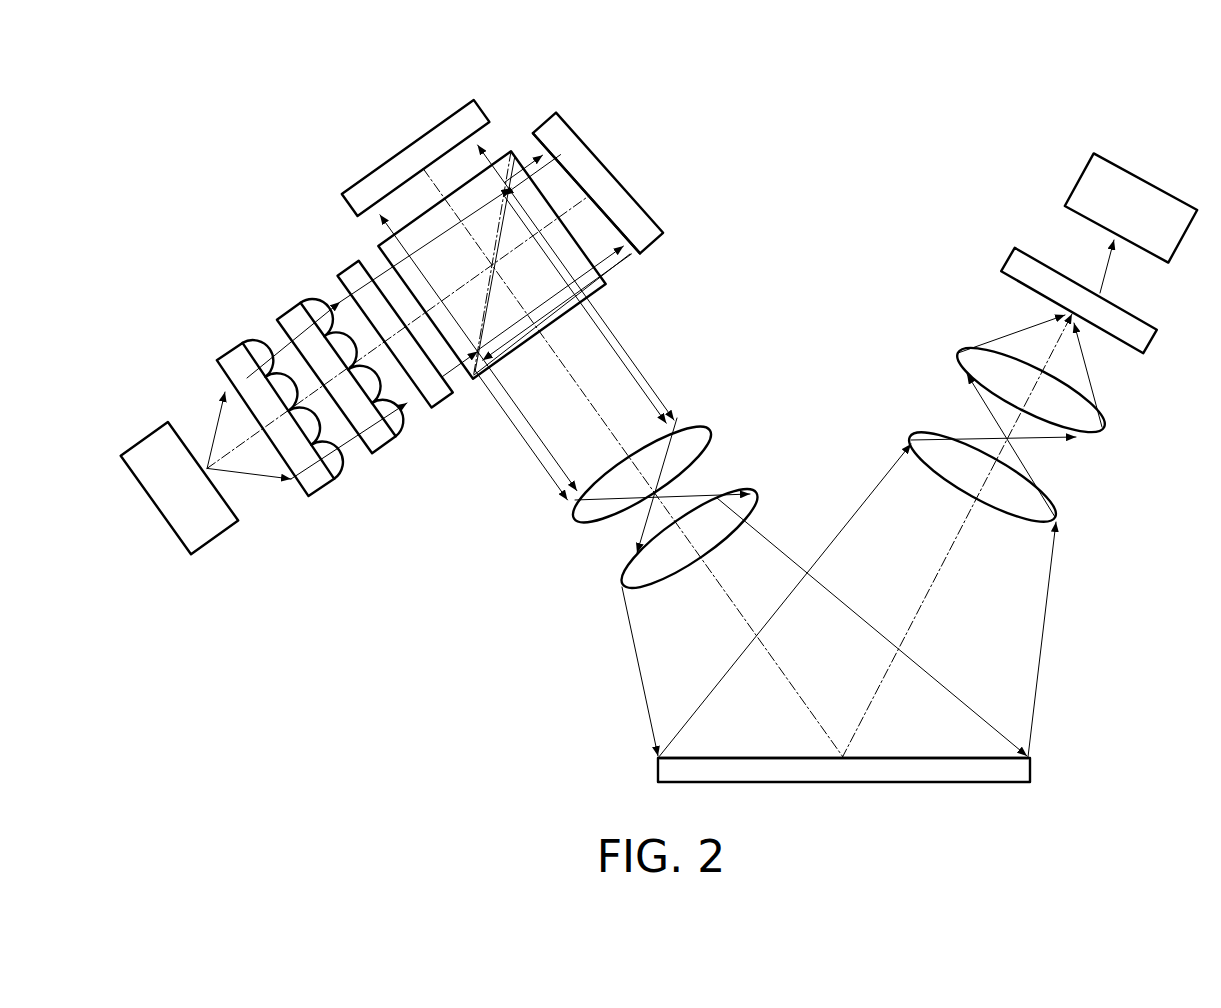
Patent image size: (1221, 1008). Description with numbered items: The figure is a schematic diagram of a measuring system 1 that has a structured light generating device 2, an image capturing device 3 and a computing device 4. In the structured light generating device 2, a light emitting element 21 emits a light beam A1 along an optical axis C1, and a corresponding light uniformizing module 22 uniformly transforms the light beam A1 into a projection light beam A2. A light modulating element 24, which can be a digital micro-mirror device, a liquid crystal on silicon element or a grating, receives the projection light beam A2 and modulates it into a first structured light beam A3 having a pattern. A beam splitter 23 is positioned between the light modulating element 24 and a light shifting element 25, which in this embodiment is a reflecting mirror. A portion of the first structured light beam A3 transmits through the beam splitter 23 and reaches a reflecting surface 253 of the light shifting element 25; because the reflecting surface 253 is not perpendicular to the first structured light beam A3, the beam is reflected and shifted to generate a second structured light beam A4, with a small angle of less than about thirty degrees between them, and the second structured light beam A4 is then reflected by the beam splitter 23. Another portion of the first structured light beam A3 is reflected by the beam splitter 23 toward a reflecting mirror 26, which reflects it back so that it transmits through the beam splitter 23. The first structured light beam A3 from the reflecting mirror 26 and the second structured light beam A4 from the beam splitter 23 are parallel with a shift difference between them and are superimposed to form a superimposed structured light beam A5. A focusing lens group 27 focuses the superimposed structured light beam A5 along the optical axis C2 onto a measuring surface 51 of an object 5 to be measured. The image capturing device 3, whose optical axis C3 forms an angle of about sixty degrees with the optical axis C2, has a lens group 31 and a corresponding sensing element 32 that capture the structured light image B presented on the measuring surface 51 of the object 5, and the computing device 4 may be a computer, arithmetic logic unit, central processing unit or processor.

The measuring system 1 is at (842, 158).
The structured light generating device 2 is at (307, 182).
The light emitting element 21 is at (153, 510).
The light uniformizing module 22 is at (298, 304).
The beam splitter 23 is at (572, 178).
The light modulating element 24 is at (358, 260).
The light shifting element 25 is at (628, 200).
The reflecting surface 253 is at (610, 207).
The reflecting mirror 26 is at (398, 148).
The focusing lens group 27 is at (620, 582).
The image capturing device 3 is at (912, 346).
The lens group 31 is at (913, 437).
The sensing element 32 is at (1012, 257).
The computing device 4 is at (1080, 182).
The object 5 is at (1032, 768).
The measuring surface 51 is at (882, 755).
The light beam A1 is at (218, 420).
The projection light beam A2 is at (336, 300).
The first structured light beam A3 is at (505, 150).
The second structured light beam A4 is at (497, 227).
The superimposed structured light beam A5 is at (683, 488).
The structured light image B is at (852, 515).
The optical axis C1 is at (243, 445).
The optical axis C2 is at (580, 391).
The optical axis C3 is at (940, 567).